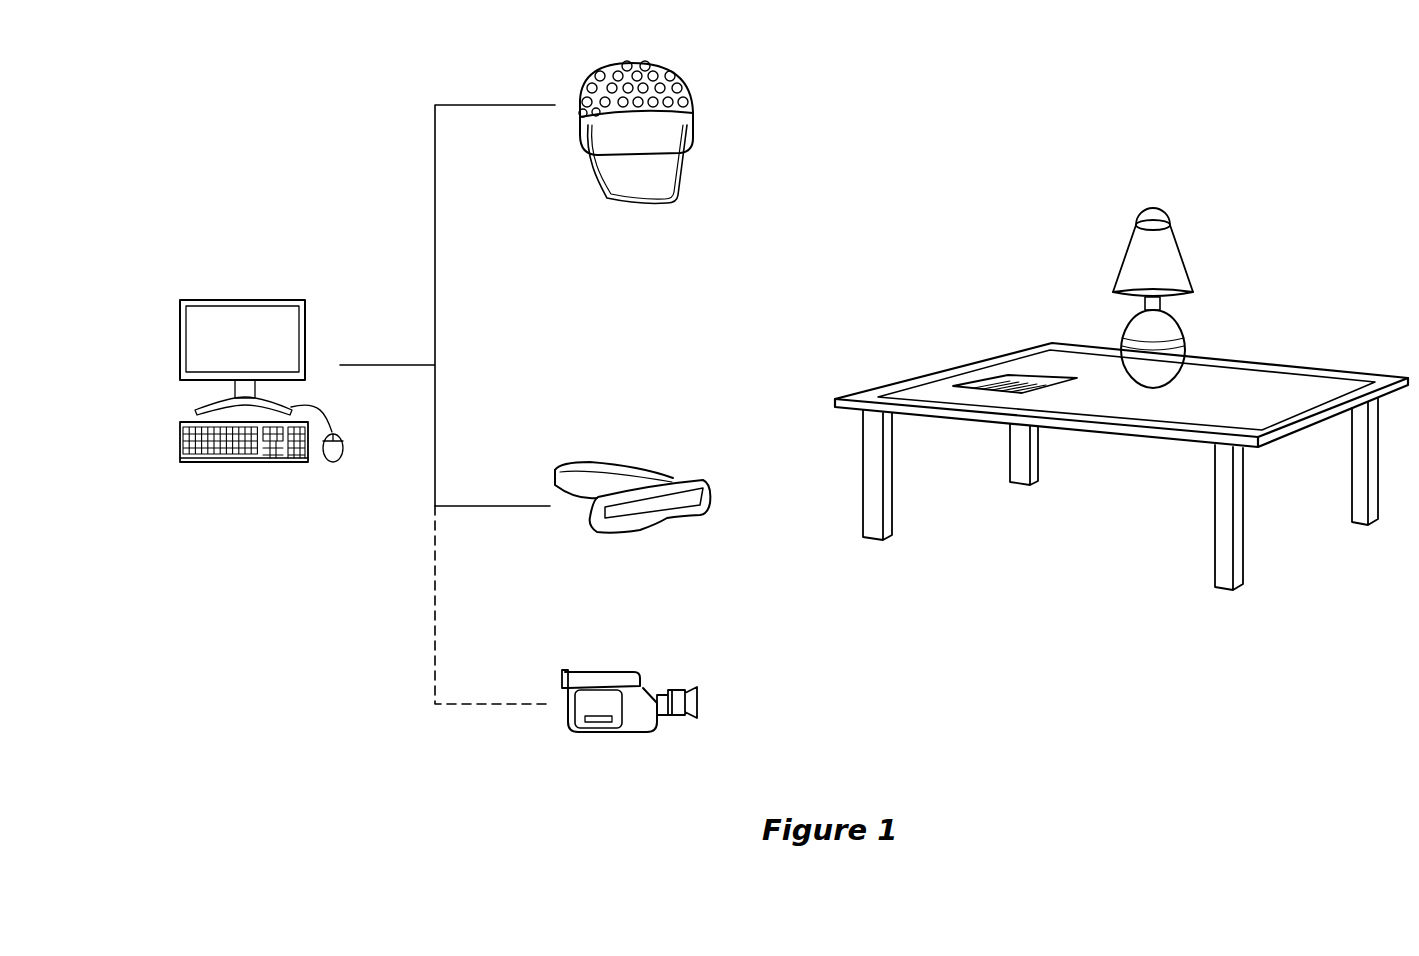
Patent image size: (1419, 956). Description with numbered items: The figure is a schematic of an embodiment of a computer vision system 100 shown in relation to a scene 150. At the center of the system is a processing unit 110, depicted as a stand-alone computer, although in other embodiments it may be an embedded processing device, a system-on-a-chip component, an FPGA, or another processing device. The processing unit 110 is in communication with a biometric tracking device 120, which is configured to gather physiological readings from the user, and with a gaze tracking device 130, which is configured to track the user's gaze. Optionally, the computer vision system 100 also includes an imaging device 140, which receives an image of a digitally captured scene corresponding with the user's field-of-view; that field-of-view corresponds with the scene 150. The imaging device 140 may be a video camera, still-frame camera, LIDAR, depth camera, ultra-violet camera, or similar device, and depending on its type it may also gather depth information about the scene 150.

The computer vision system 100 is at (206, 207).
The processing unit 110 is at (253, 298).
The biometric tracking device 120 is at (667, 67).
The gaze tracking device 130 is at (676, 472).
The imaging device 140 is at (650, 670).
The scene 150 is at (1002, 208).